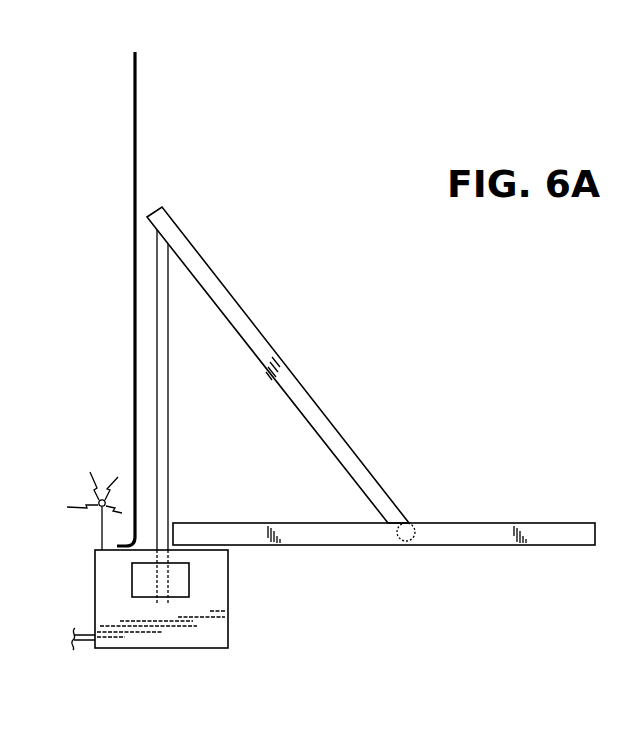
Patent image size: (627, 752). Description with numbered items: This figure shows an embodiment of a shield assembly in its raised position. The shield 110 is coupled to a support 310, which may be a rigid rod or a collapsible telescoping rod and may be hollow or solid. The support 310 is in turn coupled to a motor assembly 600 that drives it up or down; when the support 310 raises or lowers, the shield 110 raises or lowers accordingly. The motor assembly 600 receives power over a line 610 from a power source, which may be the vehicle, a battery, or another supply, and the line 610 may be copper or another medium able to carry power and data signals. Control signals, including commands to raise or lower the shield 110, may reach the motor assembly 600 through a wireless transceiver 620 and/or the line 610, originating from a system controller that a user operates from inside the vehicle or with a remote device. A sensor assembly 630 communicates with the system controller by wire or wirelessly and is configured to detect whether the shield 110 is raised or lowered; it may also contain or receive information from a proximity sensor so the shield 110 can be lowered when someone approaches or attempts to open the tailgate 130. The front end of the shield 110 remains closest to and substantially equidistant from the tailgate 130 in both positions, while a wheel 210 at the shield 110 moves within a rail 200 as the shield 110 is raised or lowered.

The tailgate 130 is at (137, 127).
The shield 110 is at (241, 303).
The support 310 is at (168, 462).
The rail 200 is at (492, 546).
The wheel 210 is at (416, 538).
The motor assembly 600 is at (95, 590).
The wireless transceiver 620 is at (101, 501).
The sensor assembly 630 is at (189, 585).
The line 610 is at (82, 641).